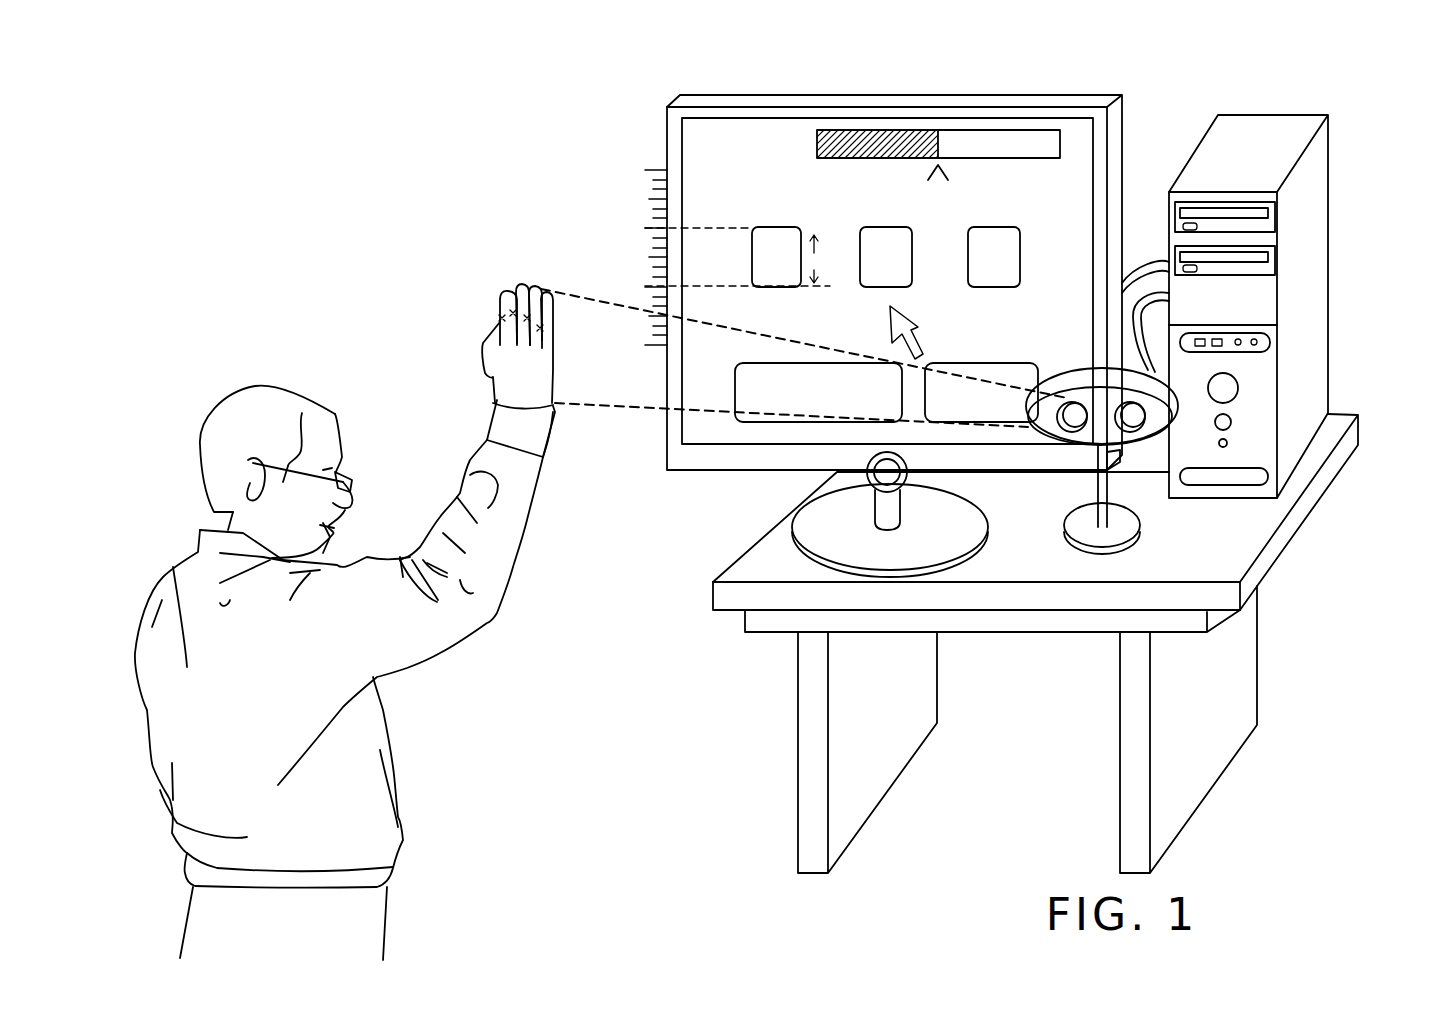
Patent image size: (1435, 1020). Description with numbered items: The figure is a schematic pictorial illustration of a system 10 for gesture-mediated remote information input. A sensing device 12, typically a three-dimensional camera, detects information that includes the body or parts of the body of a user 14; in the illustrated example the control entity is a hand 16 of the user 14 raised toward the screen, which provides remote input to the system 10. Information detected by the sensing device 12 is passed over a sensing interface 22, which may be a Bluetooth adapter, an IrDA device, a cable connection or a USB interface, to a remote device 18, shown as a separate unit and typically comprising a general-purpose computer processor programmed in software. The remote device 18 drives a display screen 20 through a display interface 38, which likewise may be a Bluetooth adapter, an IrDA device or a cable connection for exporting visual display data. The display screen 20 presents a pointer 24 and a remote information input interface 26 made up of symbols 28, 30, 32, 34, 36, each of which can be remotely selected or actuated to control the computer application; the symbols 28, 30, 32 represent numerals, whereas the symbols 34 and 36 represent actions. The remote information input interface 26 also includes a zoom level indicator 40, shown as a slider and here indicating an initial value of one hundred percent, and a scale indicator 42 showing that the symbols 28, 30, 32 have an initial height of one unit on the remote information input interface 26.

The system 10 is at (412, 162).
The sensing device 12 is at (1176, 398).
The user 14 is at (157, 578).
The hand 16 is at (498, 299).
The remote device 18 is at (1328, 150).
The display screen 20 is at (765, 95).
The sensing interface 22 is at (1140, 300).
The pointer 24 is at (920, 337).
The remote information input interface 26 is at (683, 150).
The symbol 28 is at (783, 227).
The symbol 30 is at (868, 288).
The symbol 32 is at (1022, 253).
The symbol 34 is at (735, 379).
The symbol 36 is at (967, 425).
The display interface 38 is at (1167, 263).
The zoom level indicator 40 is at (987, 137).
The scale indicator 42 is at (620, 168).